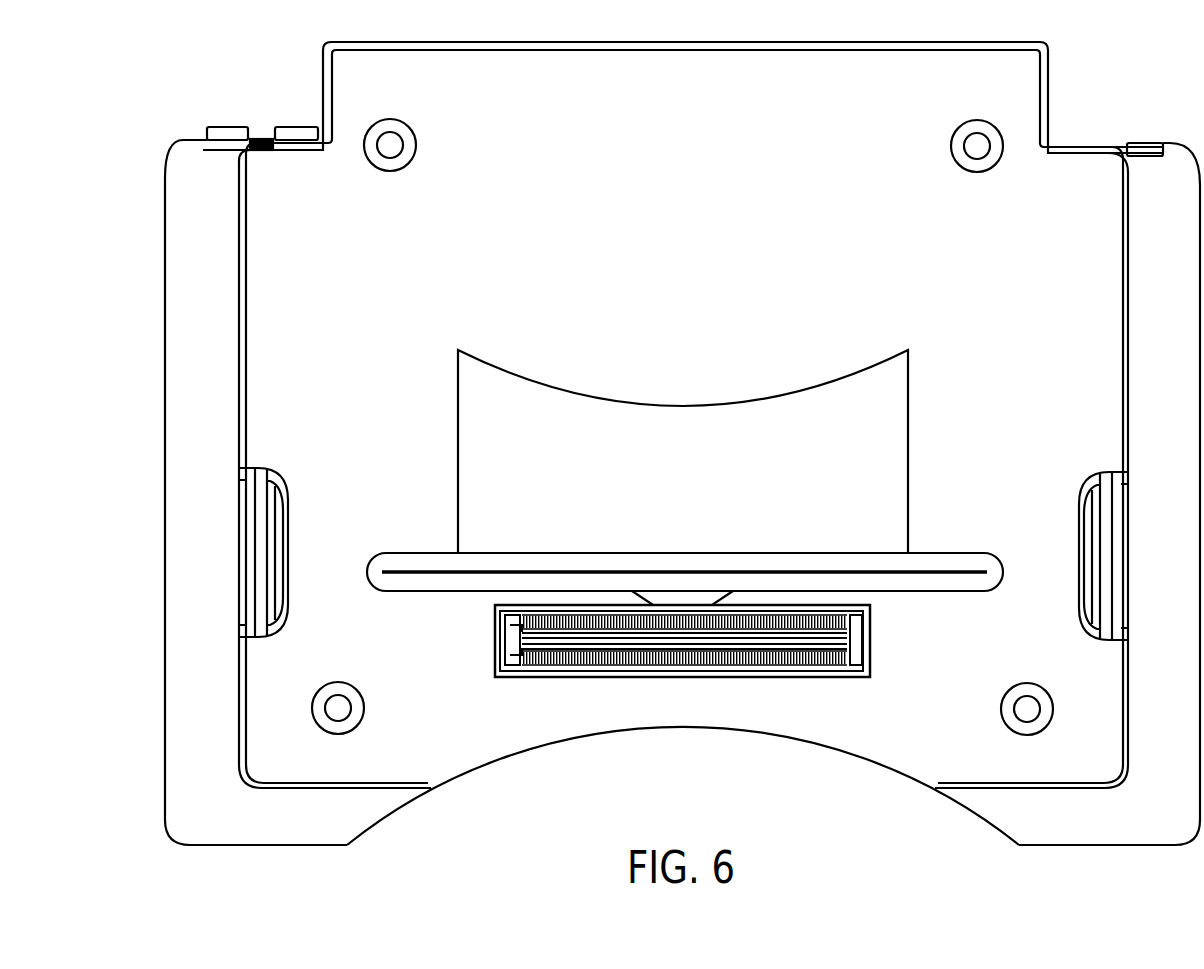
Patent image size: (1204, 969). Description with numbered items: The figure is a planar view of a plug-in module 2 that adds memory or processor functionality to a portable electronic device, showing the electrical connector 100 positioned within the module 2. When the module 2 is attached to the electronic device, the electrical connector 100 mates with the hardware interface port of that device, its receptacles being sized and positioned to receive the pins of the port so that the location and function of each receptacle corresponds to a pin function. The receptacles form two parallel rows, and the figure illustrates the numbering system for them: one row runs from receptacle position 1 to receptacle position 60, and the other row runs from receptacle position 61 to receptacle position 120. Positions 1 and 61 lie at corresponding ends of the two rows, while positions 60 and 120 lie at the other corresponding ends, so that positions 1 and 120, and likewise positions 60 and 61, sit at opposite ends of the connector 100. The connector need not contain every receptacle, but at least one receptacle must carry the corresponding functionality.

The receptacle position 1 is at (510, 623).
The module 2 is at (1057, 53).
The receptacle position 60 is at (836, 654).
The receptacle position 61 is at (518, 642).
The electrical connector 100 is at (673, 690).
The receptacle position 120 is at (845, 612).